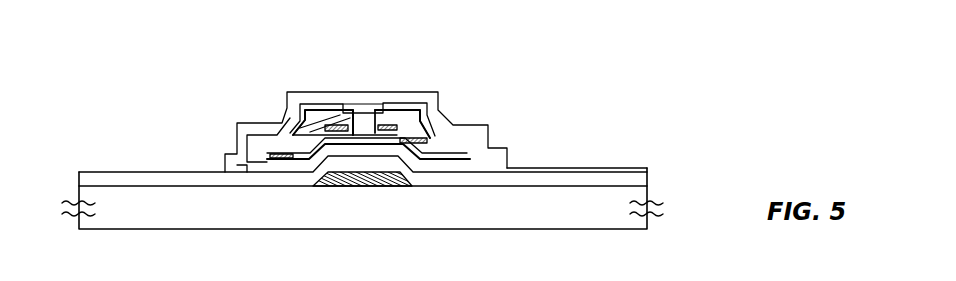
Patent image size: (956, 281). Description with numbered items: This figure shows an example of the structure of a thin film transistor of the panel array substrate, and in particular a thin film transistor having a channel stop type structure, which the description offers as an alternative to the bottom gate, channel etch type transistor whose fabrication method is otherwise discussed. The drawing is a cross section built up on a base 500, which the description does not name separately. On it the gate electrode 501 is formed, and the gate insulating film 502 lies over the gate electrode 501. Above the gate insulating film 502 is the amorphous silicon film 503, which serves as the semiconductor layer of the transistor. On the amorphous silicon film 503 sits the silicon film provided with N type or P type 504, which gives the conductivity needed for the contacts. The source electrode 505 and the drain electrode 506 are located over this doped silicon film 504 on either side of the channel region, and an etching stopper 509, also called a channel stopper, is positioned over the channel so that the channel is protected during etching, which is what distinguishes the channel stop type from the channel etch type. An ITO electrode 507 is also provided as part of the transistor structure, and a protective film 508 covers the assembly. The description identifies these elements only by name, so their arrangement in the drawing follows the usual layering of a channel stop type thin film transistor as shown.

The substrate 500 is at (588, 183).
The gate electrode 501 is at (357, 182).
The gate insulating film 502 is at (145, 180).
The amorphous silicon film 503 is at (365, 150).
The silicon film provided with N type or P type 504 is at (322, 136).
The source electrode 505 is at (298, 138).
The drain electrode 506 is at (452, 146).
The ITO electrode 507 is at (318, 110).
The protective film 508 is at (392, 100).
The etching stopper (channel stopper) 509 is at (362, 135).